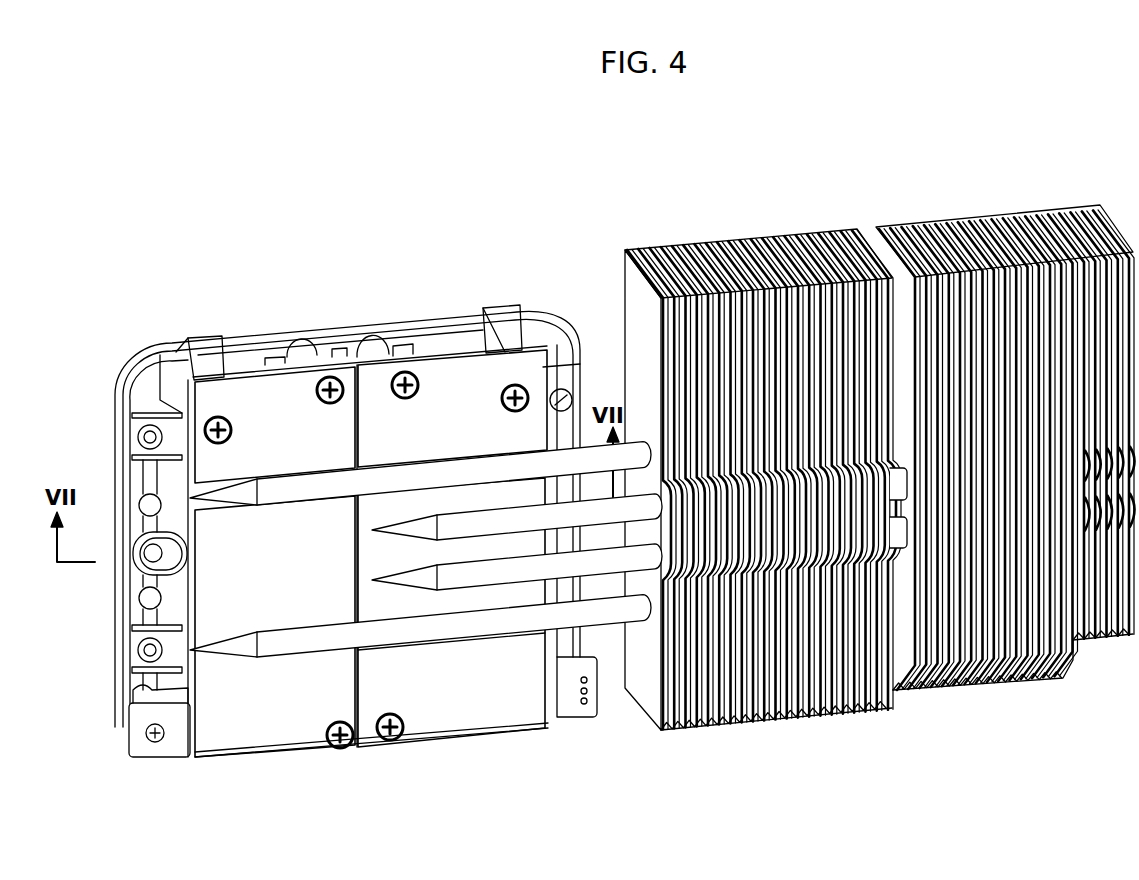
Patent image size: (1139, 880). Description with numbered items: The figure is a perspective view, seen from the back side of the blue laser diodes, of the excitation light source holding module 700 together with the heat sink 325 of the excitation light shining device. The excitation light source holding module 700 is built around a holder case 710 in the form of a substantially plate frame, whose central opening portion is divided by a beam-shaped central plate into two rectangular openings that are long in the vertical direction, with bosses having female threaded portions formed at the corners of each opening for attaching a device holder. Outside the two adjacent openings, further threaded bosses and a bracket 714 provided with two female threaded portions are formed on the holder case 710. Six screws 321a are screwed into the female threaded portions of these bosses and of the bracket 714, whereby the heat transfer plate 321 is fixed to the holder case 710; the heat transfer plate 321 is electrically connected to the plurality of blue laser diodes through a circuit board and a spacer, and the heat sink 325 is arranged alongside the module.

The excitation light source holding module 700 is at (388, 270).
The holder case 710 is at (145, 388).
The heat transfer plate 321 is at (270, 400).
The screw 321a is at (213, 418).
The bracket 714 is at (365, 748).
The heat sink 325 is at (890, 127).